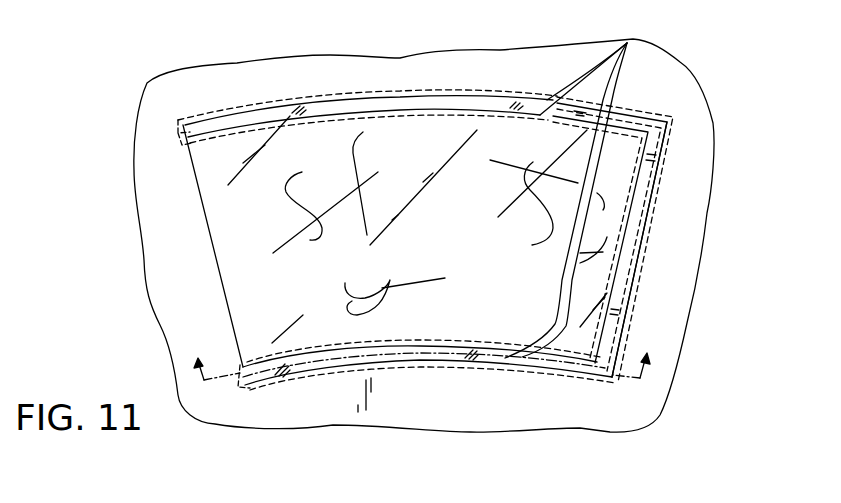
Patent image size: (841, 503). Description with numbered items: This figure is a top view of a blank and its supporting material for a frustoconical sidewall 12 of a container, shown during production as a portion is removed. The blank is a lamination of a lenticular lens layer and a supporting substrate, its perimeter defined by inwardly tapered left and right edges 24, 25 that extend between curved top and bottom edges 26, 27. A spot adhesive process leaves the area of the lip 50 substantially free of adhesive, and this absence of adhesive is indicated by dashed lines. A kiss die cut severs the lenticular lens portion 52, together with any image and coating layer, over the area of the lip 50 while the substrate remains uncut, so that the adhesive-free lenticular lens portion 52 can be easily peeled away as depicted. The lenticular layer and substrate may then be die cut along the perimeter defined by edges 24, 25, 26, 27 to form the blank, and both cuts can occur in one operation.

The sidewall 12 is at (422, 385).
The left edge 24 is at (213, 253).
The right edge 25 is at (638, 252).
The top edge 26 is at (357, 98).
The bottom edge 27 is at (425, 360).
The lip 50 is at (657, 142).
The lenticular lens portion 52 is at (615, 66).